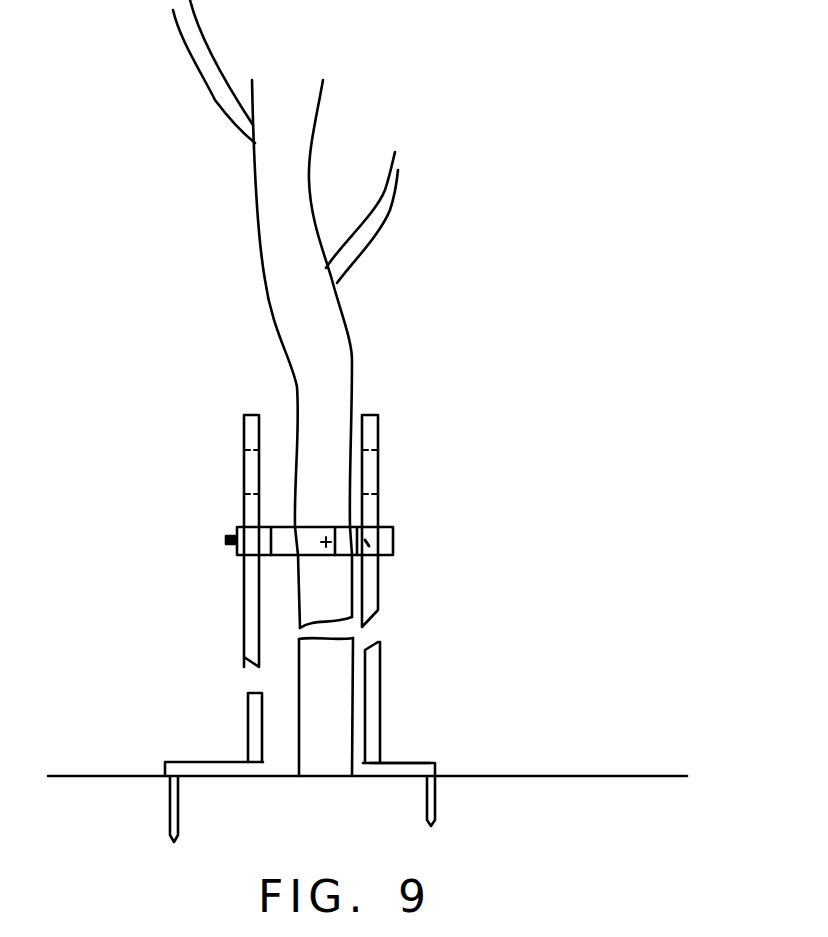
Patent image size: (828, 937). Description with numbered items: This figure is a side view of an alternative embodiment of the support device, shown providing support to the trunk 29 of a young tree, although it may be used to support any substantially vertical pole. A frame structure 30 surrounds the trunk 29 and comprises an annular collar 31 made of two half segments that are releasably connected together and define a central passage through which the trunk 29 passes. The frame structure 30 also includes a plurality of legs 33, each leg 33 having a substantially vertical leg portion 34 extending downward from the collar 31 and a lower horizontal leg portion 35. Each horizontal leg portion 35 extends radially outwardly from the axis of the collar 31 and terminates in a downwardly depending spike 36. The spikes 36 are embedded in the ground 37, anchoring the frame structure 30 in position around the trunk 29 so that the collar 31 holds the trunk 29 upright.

The trunk 29 is at (325, 342).
The frame structure 30 is at (458, 422).
The annular collar 31 is at (285, 545).
The legs 33 is at (407, 735).
The vertical leg portion 34 is at (250, 603).
The horizontal leg portion 35 is at (417, 762).
The spike 36 is at (163, 837).
The ground 37 is at (625, 795).